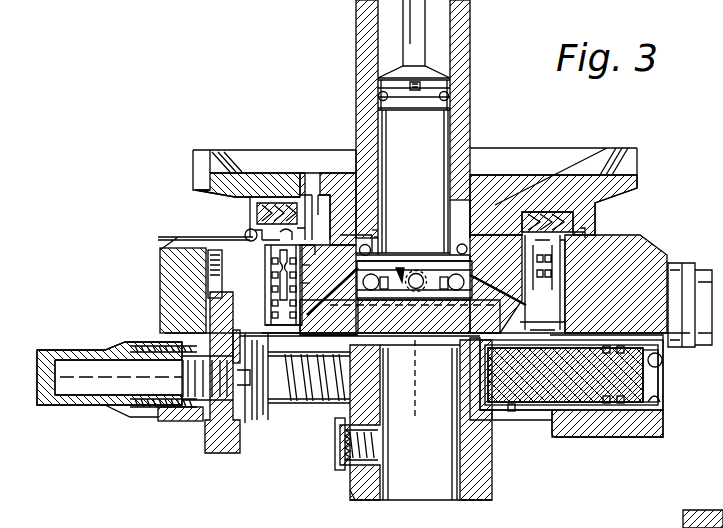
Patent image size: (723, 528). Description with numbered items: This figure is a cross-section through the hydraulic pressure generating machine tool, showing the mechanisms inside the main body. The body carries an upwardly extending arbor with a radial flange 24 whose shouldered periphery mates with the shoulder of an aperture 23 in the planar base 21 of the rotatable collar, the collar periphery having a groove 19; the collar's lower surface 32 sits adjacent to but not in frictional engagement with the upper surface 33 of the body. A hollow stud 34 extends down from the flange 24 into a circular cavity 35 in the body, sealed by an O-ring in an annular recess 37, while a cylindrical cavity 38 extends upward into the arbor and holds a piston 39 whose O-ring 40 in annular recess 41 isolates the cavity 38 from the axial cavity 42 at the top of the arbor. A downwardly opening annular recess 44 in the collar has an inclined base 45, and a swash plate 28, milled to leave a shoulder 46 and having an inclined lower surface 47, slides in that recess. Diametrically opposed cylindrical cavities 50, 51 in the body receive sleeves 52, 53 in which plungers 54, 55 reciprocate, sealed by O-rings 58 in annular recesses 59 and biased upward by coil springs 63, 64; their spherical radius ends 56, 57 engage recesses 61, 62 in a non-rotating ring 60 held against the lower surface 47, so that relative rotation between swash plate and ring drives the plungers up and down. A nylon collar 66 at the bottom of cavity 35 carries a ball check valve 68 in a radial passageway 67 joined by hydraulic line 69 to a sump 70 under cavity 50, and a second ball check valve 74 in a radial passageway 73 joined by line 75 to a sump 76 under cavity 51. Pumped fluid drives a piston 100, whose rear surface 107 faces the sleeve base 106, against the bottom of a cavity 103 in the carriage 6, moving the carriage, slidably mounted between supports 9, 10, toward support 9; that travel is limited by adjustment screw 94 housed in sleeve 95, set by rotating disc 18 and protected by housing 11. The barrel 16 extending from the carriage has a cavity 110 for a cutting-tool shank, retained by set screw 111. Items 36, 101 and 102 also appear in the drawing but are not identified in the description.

The carriage 6 is at (540, 422).
The support 9 is at (178, 422).
The support 10 is at (620, 439).
The housing 11 is at (128, 340).
The barrel 16 is at (492, 480).
The disc 18 is at (215, 456).
The groove 19 is at (198, 178).
The planar base 21 is at (285, 190).
The aperture 23 is at (325, 195).
The radial flange 24 is at (345, 198).
The swash plate 28 is at (258, 210).
The lower surface 32 is at (472, 235).
The upper surface 33 is at (400, 272).
The hollow stud 34 is at (380, 231).
The circular cavity 35 is at (368, 240).
The chamber 36 is at (415, 170).
The annular recess 37 is at (376, 214).
The cylindrical cavity 38 is at (448, 132).
The piston 39 is at (414, 112).
The O-ring 40 is at (449, 97).
The annular recess 41 is at (422, 86).
The axial cavity 42 is at (420, 22).
The annular recess 44 is at (185, 249).
The base 45 is at (275, 200).
The shoulder 46 is at (572, 240).
The lower surface 47 is at (246, 231).
The cylindrical cavity 50 is at (306, 270).
The cylindrical cavity 51 is at (562, 292).
The sleeve 52 is at (306, 284).
The sleeve 53 is at (462, 292).
The plunger 54 is at (306, 252).
The plunger 55 is at (530, 298).
The spherical radius end 56 is at (266, 257).
The spherical radius end 57 is at (573, 255).
The O-ring 58 is at (270, 287).
The annular recess 59 is at (270, 272).
The non-rotating ring 60 is at (525, 236).
The recess 61 is at (284, 200).
The recess 62 is at (468, 245).
The coil spring 63 is at (270, 301).
The coil spring 64 is at (565, 294).
The collar 66 is at (400, 266).
The radial passageway 67 is at (370, 246).
The ball check valve 68 is at (382, 343).
The hydraulic line 69 is at (368, 302).
The sump 70 is at (268, 329).
The radial passageway 73 is at (512, 276).
The ball check valve 74 is at (448, 349).
The hydraulic line 75 is at (458, 355).
The sump 76 is at (566, 326).
The adjustment screw 94 is at (272, 406).
The sleeve 95 is at (140, 408).
The piston 100 is at (565, 439).
The filter 101 is at (600, 350).
The chamber 102 is at (618, 365).
The cavity 103 is at (512, 411).
The sleeve base 106 is at (663, 364).
The rear surface 107 is at (663, 385).
The cavity 110 is at (440, 500).
The set screw 111 is at (335, 455).